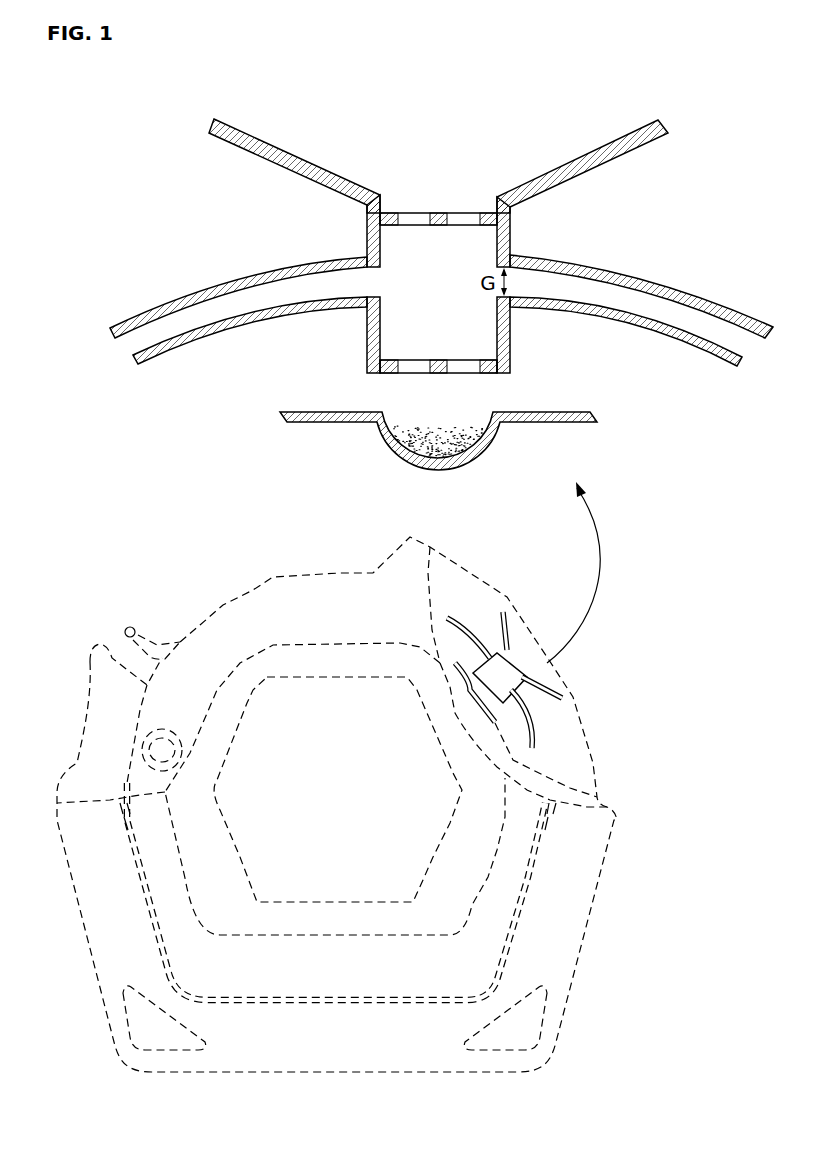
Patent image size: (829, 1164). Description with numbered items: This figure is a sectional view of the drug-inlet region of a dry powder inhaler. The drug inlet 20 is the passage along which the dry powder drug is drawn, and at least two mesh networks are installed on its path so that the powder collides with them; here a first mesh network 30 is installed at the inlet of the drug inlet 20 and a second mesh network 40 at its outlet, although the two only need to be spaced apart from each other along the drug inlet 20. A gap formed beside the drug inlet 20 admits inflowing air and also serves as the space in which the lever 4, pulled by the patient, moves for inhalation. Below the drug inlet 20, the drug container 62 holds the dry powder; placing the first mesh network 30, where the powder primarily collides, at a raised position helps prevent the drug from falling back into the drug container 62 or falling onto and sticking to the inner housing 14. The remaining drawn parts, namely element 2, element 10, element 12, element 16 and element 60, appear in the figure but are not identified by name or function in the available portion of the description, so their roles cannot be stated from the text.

The vehicle body 2 is at (353, 1043).
The lever 4 is at (125, 625).
The panel 10 is at (441, 293).
The inner panel 12 is at (688, 247).
The inner housing 14 is at (663, 330).
The flange 16 is at (632, 130).
The drug inlet 20 is at (367, 330).
The first mesh network 30 is at (475, 357).
The second mesh network 40 is at (455, 211).
The cover member 60 is at (326, 422).
The drug container 62 is at (462, 448).